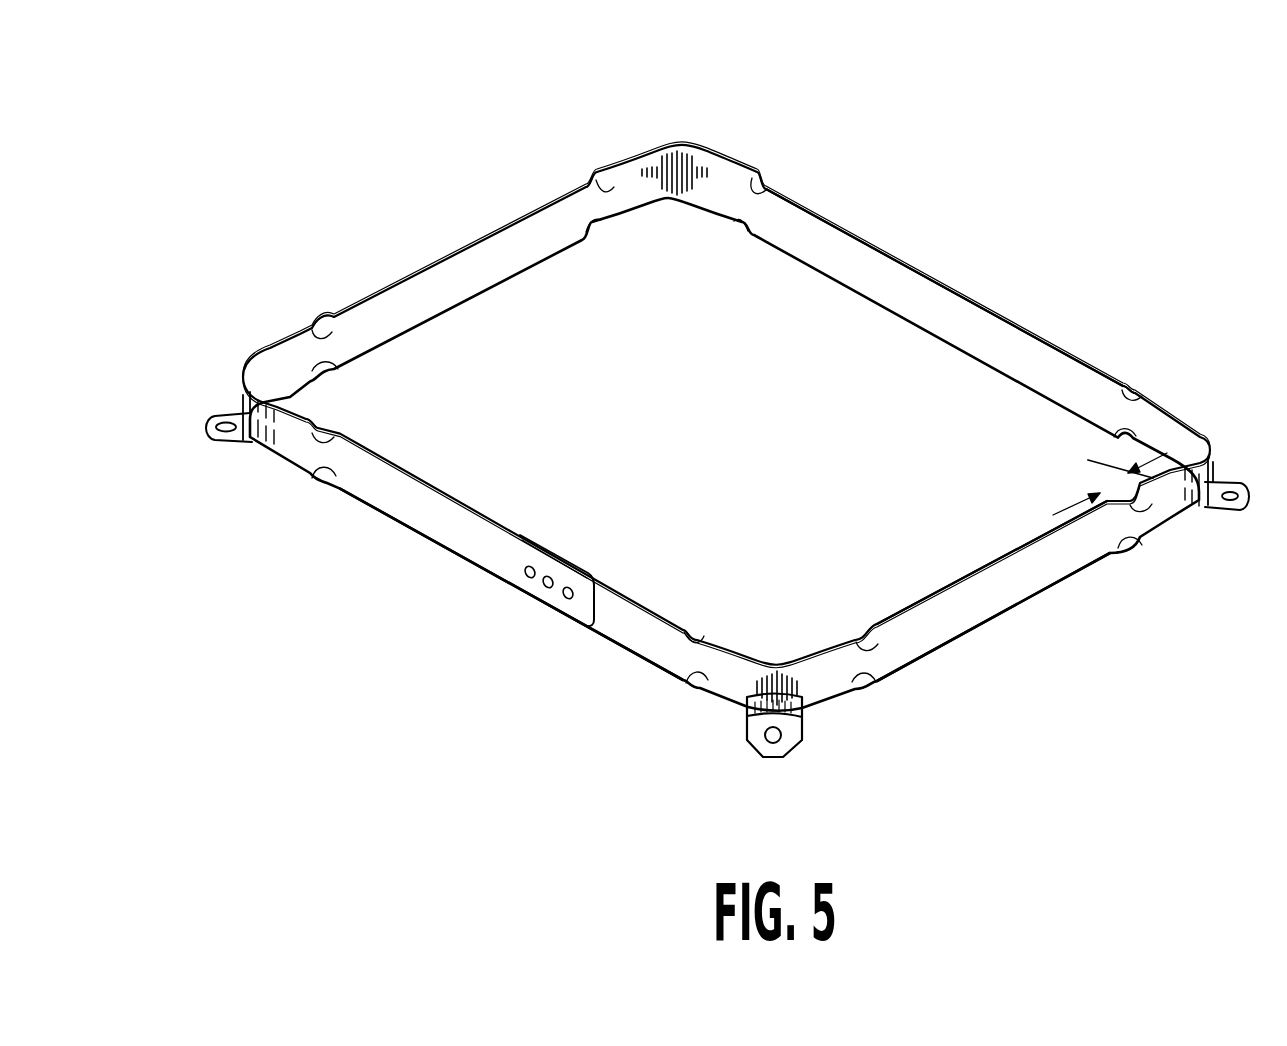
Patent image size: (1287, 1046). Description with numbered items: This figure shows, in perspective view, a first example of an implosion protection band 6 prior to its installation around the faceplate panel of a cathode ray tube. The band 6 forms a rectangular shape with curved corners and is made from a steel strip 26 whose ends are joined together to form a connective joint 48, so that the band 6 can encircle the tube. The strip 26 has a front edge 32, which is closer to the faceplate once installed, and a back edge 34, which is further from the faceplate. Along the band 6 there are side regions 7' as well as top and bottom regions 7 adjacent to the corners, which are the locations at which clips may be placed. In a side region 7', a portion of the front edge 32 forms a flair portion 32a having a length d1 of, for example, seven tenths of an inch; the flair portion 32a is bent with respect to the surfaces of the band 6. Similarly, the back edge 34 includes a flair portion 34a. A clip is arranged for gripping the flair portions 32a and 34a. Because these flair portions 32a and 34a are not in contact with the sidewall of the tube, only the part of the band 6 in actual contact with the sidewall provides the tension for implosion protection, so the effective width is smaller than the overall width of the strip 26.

The implosion protection band 6 is at (696, 397).
The top and bottom regions 7 is at (708, 427).
The side regions 7' is at (733, 428).
The steel strip 26 is at (448, 538).
The front edge 32 is at (1030, 541).
The flair portion 32a is at (1142, 391).
The back edge 34 is at (1000, 615).
The flair portion 34a is at (1137, 544).
The connective joint 48 is at (575, 613).
The length of flair portion d1 is at (1105, 495).